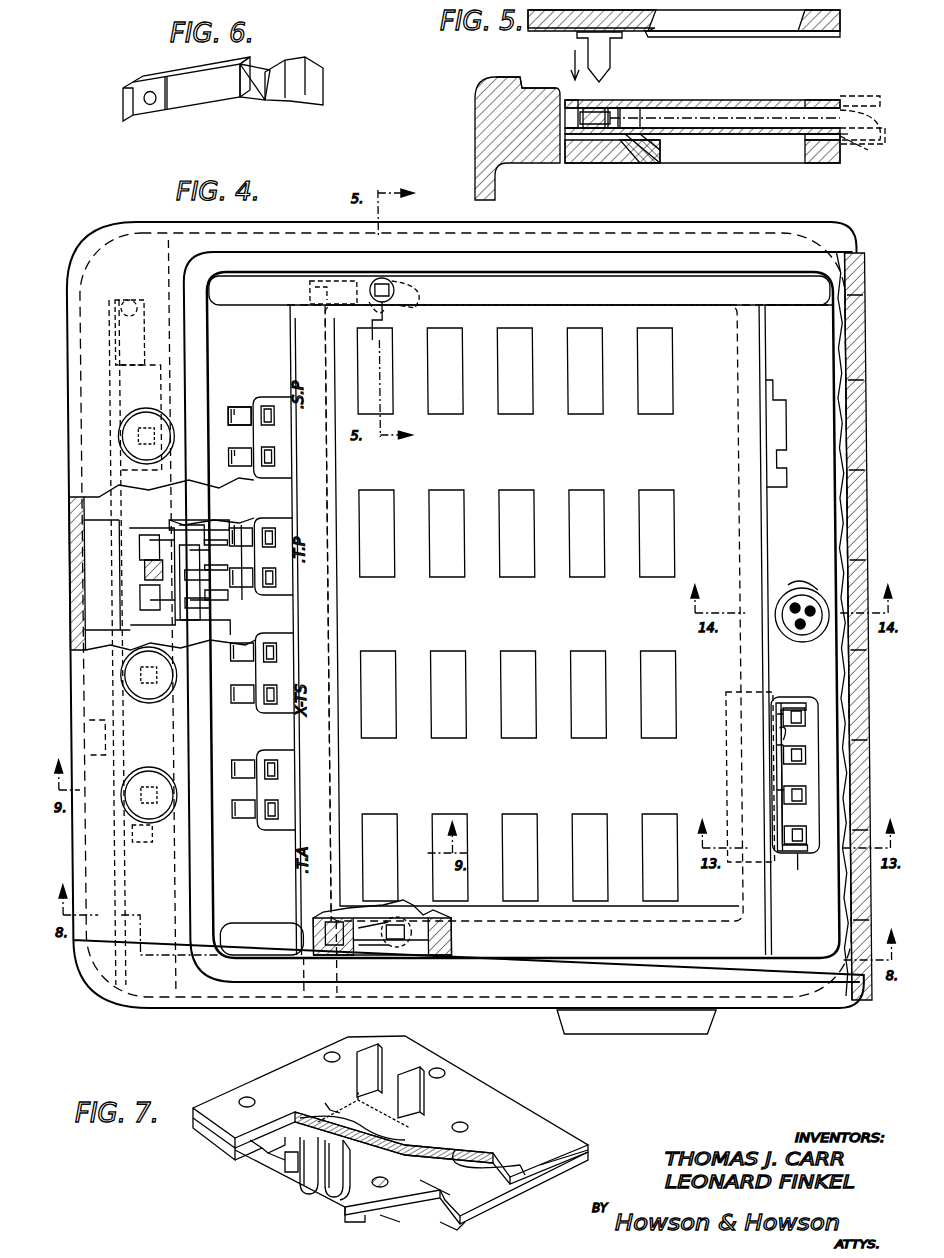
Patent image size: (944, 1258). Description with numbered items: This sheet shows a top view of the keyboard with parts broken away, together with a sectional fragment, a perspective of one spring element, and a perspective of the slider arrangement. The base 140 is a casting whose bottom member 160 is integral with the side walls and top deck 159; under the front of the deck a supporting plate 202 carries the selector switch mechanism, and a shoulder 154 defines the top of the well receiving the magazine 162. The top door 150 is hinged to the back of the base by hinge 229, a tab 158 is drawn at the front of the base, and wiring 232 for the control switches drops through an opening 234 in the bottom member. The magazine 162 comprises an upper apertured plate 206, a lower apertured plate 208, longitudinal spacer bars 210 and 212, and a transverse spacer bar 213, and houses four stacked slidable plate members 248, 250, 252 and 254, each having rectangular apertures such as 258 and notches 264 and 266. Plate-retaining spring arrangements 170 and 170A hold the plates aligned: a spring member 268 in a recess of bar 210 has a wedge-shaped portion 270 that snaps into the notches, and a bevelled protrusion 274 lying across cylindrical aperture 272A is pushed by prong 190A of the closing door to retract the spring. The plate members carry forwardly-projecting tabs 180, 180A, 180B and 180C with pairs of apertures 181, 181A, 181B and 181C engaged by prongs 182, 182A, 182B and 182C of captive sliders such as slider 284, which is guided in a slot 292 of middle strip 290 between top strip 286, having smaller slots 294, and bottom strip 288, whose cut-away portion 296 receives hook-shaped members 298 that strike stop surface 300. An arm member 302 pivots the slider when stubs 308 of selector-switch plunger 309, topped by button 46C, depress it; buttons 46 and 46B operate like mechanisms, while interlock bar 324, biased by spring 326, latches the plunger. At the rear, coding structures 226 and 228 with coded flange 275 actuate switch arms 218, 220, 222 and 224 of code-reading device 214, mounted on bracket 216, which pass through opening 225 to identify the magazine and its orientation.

In FIG. 5, the base 140 is at (476, 102).
In FIG. 4, the base 140 is at (103, 237).
In FIG. 5, the top door 150 is at (842, 16).
In FIG. 4, the top door 150 is at (838, 330).
In FIG. 5, the shoulder 154 is at (520, 76).
In FIG. 4, the shoulder 154 is at (570, 262).
In FIG. 4, the tab 158 is at (710, 1025).
In FIG. 4, the top deck 159 is at (113, 272).
In FIG. 5, the bottom member 160 is at (712, 140).
In FIG. 4, the bottom member 160 is at (800, 422).
In FIG. 5, the magazine 162 is at (808, 99).
In FIG. 4, the magazine 162 is at (536, 612).
In FIG. 4, the plate-retaining spring arrangement 170 is at (400, 945).
In FIG. 4, the plate-retaining spring arrangement 170A is at (412, 283).
In FIG. 4, the forwardly-projecting tab 180 is at (280, 412).
In FIG. 4, the pair of rectangular apertures 181 is at (276, 458).
In FIG. 4, the pair of upwardly-projecting prongs 182 is at (266, 462).
In FIG. 4, the forwardly-projecting tab 180A is at (278, 576).
In FIG. 4, the pair of rectangular apertures 181A is at (276, 578).
In FIG. 4, the pair of upwardly-projecting prongs 182A is at (268, 578).
In FIG. 4, the forwardly-projecting tab 180B is at (278, 652).
In FIG. 4, the pair of rectangular apertures 181B is at (276, 695).
In FIG. 4, the pair of upwardly-projecting prongs 182B is at (268, 698).
In FIG. 4, the forwardly-projecting tab 180C is at (280, 826).
In FIG. 4, the pair of rectangular apertures 181C is at (276, 810).
In FIG. 4, the pair of upwardly-projecting prongs 182C is at (268, 812).
In FIG. 7, the pair of upwardly-projecting prongs 182C is at (410, 1080).
In FIG. 5, the prong 190A is at (612, 52).
In FIG. 4, the supporting plate 202 is at (118, 846).
In FIG. 5, the upper apertured plate 206 is at (820, 99).
In FIG. 5, the lower apertured plate 208 is at (842, 138).
In FIG. 5, the longitudinal spacer bar 210 is at (618, 138).
In FIG. 4, the longitudinal spacer bar 210 is at (268, 298).
In FIG. 4, the longitudinal spacer bar 212 is at (255, 930).
In FIG. 4, the transverse spacer bar 213 is at (732, 453).
In FIG. 4, the code-reading device 214 is at (806, 698).
In FIG. 4, the bracket 216 is at (726, 690).
In FIG. 4, the switch actuating arm 218 is at (790, 717).
In FIG. 4, the switch actuating arm 220 is at (790, 757).
In FIG. 4, the switch actuating arm 222 is at (790, 795).
In FIG. 4, the switch actuating arm 224 is at (790, 834).
In FIG. 4, the opening 225 is at (796, 858).
In FIG. 4, the coding structure 226 is at (782, 698).
In FIG. 4, the coding structure 228 is at (788, 402).
In FIG. 4, the hinge 229 is at (862, 495).
In FIG. 4, the wiring 232 is at (805, 600).
In FIG. 4, the opening 234 is at (786, 595).
In FIG. 5, the slidable plate member 248 is at (866, 150).
In FIG. 5, the slidable plate member 250 is at (866, 139).
In FIG. 5, the slidable plate member 252 is at (863, 112).
In FIG. 5, the slidable plate member 254 is at (848, 98).
In FIG. 5, the rectangular aperture 258 is at (815, 138).
In FIG. 5, the notch 264 is at (642, 140).
In FIG. 4, the notch 264 is at (398, 303).
In FIG. 4, the notch 266 is at (430, 912).
In FIG. 6, the spring member 268 is at (212, 76).
In FIG. 5, the spring member 268 is at (585, 123).
In FIG. 4, the spring member 268 is at (362, 278).
In FIG. 6, the wedge-shaped portion 270 is at (325, 96).
In FIG. 5, the wedge-shaped portion 270 is at (640, 116).
In FIG. 5, the cylindrical aperture 272A is at (578, 92).
In FIG. 4, the cylindrical aperture 272A is at (395, 268).
In FIG. 6, the bevelled protrusion 274 is at (250, 90).
In FIG. 5, the bevelled protrusion 274 is at (598, 110).
In FIG. 4, the rearwardly-extending flange 275 is at (780, 732).
In FIG. 4, the captive slider 284 is at (249, 405).
In FIG. 7, the captive slider 284 is at (318, 1120).
In FIG. 4, the top strip 286 is at (264, 421).
In FIG. 7, the top strip 286 is at (281, 1060).
In FIG. 7, the bottom strip 288 is at (515, 1195).
In FIG. 4, the middle strip 290 is at (176, 515).
In FIG. 7, the middle strip 290 is at (345, 1218).
In FIG. 7, the slot 292 is at (250, 1142).
In FIG. 7, the smaller slot 294 is at (490, 1150).
In FIG. 4, the cut-away portion 296 is at (205, 530).
In FIG. 7, the cut-away portion 296 is at (282, 1158).
In FIG. 4, the hook-shaped members 298 is at (210, 580).
In FIG. 7, the hook-shaped members 298 is at (298, 1178).
In FIG. 7, the stop surface 300 is at (450, 1224).
In FIG. 4, the arm member 302 is at (185, 575).
In FIG. 4, the stubs 308 is at (140, 578).
In FIG. 4, the selector-switch plunger 309 is at (140, 560).
In FIG. 4, the interlock bar 324 is at (148, 842).
In FIG. 4, the spring 326 is at (140, 318).
In FIG. 4, the selector switch button 46 is at (128, 422).
In FIG. 4, the selector switch button 46B is at (132, 668).
In FIG. 4, the selector switch button 46C is at (128, 800).